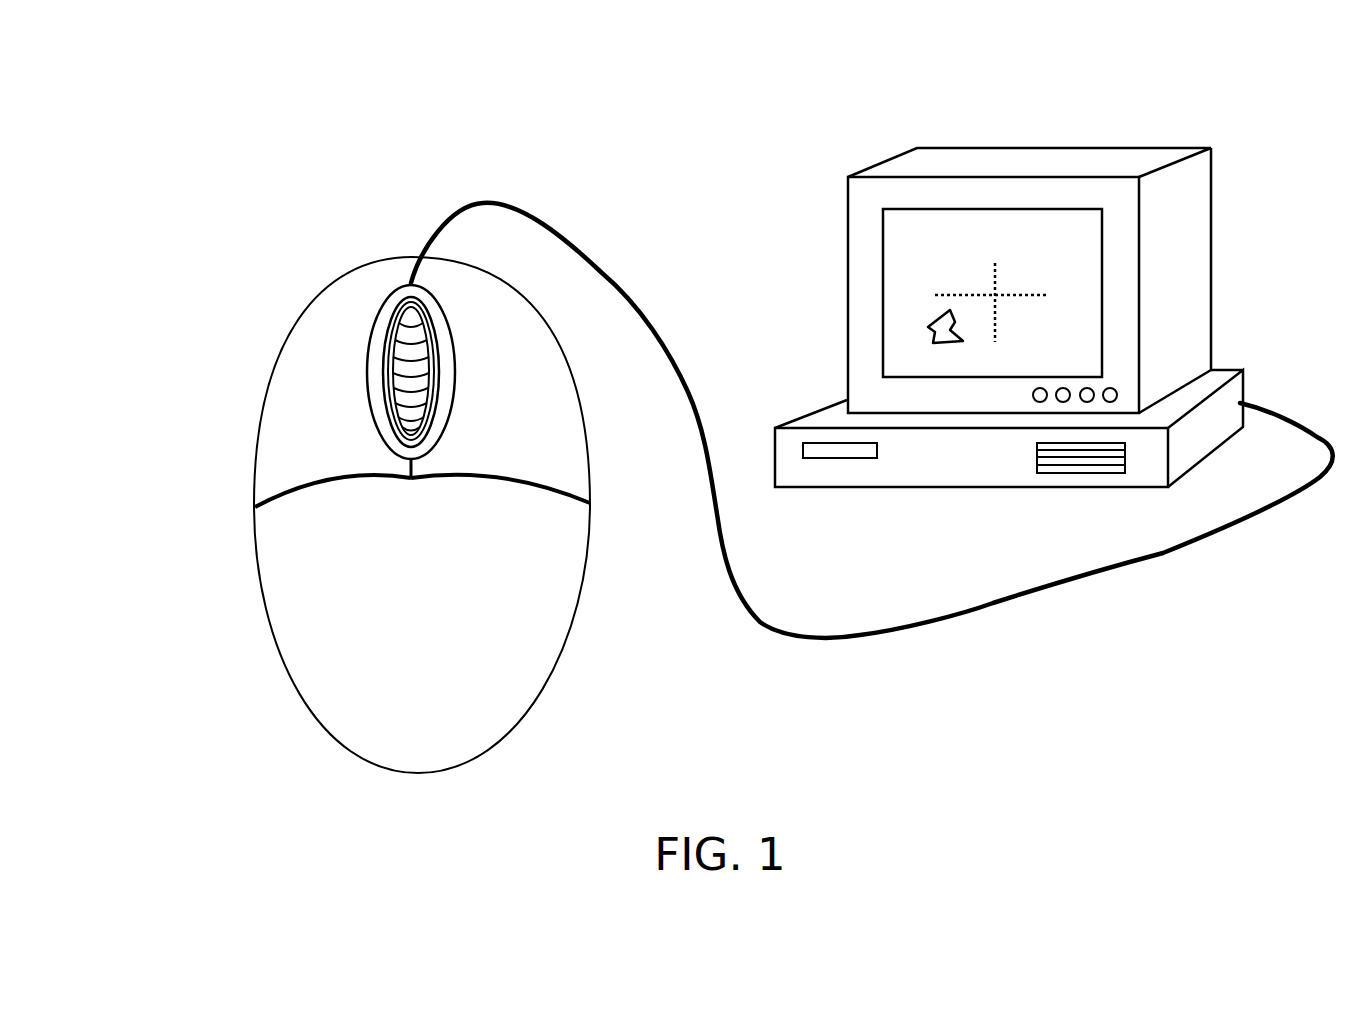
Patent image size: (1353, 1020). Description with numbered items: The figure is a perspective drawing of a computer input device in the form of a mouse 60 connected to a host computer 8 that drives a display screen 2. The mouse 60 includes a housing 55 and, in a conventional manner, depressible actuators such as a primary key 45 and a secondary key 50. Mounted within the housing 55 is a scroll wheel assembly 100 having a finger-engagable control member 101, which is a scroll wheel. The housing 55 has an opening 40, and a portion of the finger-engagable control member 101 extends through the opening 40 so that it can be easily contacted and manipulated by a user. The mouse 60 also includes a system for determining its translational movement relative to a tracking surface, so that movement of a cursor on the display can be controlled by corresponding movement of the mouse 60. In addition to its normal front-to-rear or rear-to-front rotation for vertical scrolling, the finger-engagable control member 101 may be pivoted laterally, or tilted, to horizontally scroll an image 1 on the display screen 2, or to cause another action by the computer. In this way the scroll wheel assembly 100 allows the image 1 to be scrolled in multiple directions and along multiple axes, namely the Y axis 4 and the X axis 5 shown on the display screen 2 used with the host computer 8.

The mouse 60 is at (340, 131).
The scroll wheel assembly 100 is at (365, 295).
The finger-engagable control member 101 is at (410, 337).
The opening 40 is at (387, 357).
The primary key 45 is at (322, 400).
The secondary key 50 is at (528, 415).
The housing 55 is at (262, 548).
The image 1 is at (922, 325).
The display screen 2 is at (1185, 235).
The Y axis of display screen 4 is at (995, 263).
The X axis of display screen 5 is at (943, 293).
The host computer 8 is at (1245, 378).